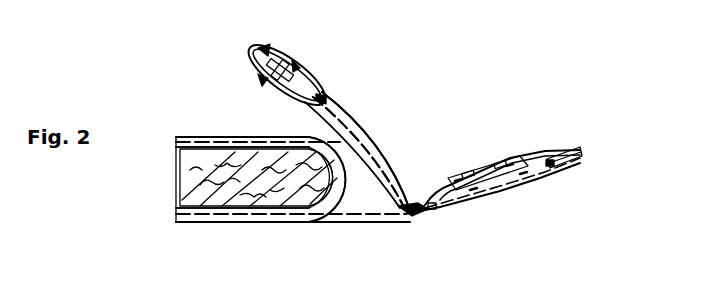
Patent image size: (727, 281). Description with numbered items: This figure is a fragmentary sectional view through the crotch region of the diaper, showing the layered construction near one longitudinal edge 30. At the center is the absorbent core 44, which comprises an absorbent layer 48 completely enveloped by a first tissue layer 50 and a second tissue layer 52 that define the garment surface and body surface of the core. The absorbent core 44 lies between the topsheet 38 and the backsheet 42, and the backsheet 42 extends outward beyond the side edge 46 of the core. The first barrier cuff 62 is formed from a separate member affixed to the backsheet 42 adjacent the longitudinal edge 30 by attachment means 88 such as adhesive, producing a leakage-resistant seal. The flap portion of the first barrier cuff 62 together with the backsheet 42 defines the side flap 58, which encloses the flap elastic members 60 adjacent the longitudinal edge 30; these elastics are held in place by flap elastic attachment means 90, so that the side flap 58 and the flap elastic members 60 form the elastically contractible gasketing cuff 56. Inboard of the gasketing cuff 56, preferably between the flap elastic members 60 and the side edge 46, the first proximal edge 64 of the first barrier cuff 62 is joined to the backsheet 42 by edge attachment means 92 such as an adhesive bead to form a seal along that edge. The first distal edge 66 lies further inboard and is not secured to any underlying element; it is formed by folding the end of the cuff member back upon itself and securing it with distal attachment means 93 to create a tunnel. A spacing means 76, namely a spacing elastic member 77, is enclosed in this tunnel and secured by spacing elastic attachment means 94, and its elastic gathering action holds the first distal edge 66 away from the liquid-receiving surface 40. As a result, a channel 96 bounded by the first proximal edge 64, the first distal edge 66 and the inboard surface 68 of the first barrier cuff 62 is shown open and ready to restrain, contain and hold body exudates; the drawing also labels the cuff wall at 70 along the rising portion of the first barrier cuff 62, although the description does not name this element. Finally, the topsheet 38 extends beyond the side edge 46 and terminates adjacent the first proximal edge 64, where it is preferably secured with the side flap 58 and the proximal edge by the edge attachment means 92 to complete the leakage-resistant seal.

The longitudinal edge 30 is at (584, 152).
The topsheet 38 is at (176, 136).
The liquid-receiving surface 40 is at (203, 136).
The backsheet 42 is at (192, 224).
The absorbent core 44 is at (160, 168).
The side edge 46 is at (352, 192).
The absorbent layer 48 is at (176, 197).
The first tissue layer 50 is at (263, 136).
The second tissue layer 52 is at (250, 224).
The gasketing cuff 56 is at (524, 142).
The side flap 58 is at (493, 188).
The flap elastic members 60 is at (494, 166).
The first barrier cuff 62 is at (376, 118).
The first proximal edge 64 is at (413, 205).
The first distal edge 66 is at (248, 51).
The inboard surface 68 is at (334, 108).
The strap outer edge 70 is at (362, 158).
The spacing means 76 is at (265, 47).
The spacing elastic member 77 is at (286, 72).
The attachment means 88 is at (434, 212).
The flap elastic attachment means 90 is at (510, 165).
The edge attachment means 92 is at (410, 214).
The distal attachment means 93 is at (323, 97).
The spacing elastic attachment means 94 is at (291, 62).
The channel 96 is at (330, 132).